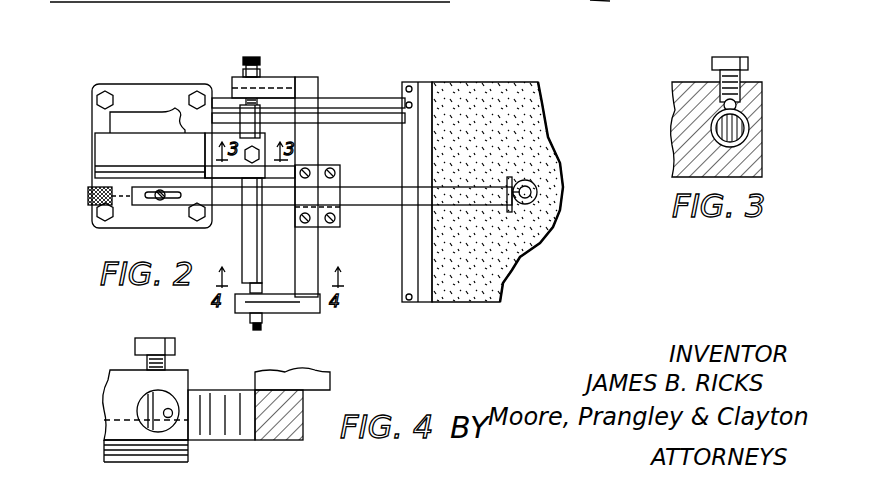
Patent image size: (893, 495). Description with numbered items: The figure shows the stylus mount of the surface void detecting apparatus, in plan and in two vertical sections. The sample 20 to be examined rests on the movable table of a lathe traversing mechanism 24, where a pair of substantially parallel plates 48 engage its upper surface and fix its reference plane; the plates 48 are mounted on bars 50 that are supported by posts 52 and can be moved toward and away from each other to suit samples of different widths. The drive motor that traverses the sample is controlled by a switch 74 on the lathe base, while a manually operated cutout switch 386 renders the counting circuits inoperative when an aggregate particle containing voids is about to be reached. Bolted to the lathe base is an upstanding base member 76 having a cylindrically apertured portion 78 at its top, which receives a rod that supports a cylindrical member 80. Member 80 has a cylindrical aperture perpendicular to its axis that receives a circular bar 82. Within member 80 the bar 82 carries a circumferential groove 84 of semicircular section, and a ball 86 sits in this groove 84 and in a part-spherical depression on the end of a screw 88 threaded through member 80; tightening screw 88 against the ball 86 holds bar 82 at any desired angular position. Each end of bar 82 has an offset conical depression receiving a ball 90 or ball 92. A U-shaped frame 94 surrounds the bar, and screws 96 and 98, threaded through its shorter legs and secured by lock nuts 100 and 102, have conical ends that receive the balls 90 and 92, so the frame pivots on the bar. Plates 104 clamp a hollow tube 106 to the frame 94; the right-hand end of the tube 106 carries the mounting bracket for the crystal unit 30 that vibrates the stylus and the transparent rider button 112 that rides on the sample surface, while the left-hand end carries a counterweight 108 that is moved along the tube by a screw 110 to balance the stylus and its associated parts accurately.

In FIG. 2, the sample 20 is at (470, 100).
In FIG. 2, the lathe traversing mechanism 24 is at (118, 12).
In FIG. 2, the crystal unit 30 is at (535, 183).
In FIG. 2, the plates 48 is at (425, 85).
In FIG. 2, the bars 50 is at (405, 89).
In FIG. 2, the posts 52 is at (405, 298).
In FIG. 2, the switch 74 is at (538, 0).
In FIG. 2, the base member 76 is at (130, 125).
In FIG. 2, the cylindrically apertured portion 78 is at (112, 150).
In FIG. 2, the cylindrical member 80 is at (212, 145).
In FIG. 3, the cylindrical member 80 is at (692, 110).
In FIG. 4, the cylindrical member 80 is at (128, 390).
In FIG. 2, the circular bar 82 is at (245, 245).
In FIG. 3, the circular bar 82 is at (735, 127).
In FIG. 4, the circular bar 82 is at (150, 408).
In FIG. 3, the groove 84 is at (748, 118).
In FIG. 3, the ball 86 is at (740, 100).
In FIG. 2, the screw 88 is at (256, 152).
In FIG. 3, the screw 88 is at (726, 75).
In FIG. 4, the screw 88 is at (150, 345).
In FIG. 2, the ball 90 is at (262, 105).
In FIG. 2, the ball 92 is at (262, 290).
In FIG. 4, the ball 92 is at (165, 418).
In FIG. 2, the U-shaped frame 94 is at (295, 88).
In FIG. 4, the U-shaped frame 94 is at (283, 440).
In FIG. 2, the screw 96 is at (252, 57).
In FIG. 2, the screw 98 is at (250, 325).
In FIG. 2, the lock nut 100 is at (262, 73).
In FIG. 2, the lock nut 102 is at (250, 318).
In FIG. 2, the plates 104 is at (315, 178).
In FIG. 4, the plates 104 is at (320, 380).
In FIG. 2, the hollow tube 106 is at (373, 195).
In FIG. 4, the hollow tube 106 is at (221, 415).
In FIG. 2, the counterweight 108 is at (88, 198).
In FIG. 2, the screw 110 is at (160, 200).
In FIG. 2, the rider button 112 is at (527, 194).
In FIG. 2, the cutout switch 386 is at (605, 0).